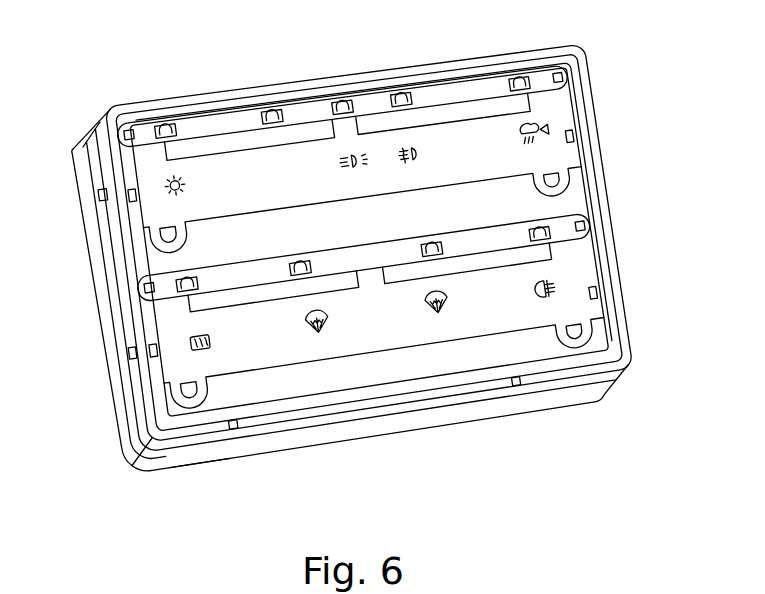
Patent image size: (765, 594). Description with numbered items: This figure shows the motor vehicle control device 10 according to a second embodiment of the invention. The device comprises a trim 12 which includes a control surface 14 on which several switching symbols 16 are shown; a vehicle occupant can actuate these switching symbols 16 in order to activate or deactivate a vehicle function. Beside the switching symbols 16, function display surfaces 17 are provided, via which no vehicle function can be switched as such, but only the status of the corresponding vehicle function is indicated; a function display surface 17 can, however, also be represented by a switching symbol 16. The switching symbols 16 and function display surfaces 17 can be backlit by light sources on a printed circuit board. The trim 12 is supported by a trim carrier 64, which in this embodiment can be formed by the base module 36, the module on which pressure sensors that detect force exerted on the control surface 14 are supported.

The motor vehicle control device 10 is at (124, 79).
The trim 12 is at (110, 110).
The control surface 14 is at (239, 118).
The switching symbols 16 is at (298, 165).
The function display surfaces 17 is at (345, 102).
The base module 36 is at (193, 458).
The trim carrier 64 is at (240, 467).